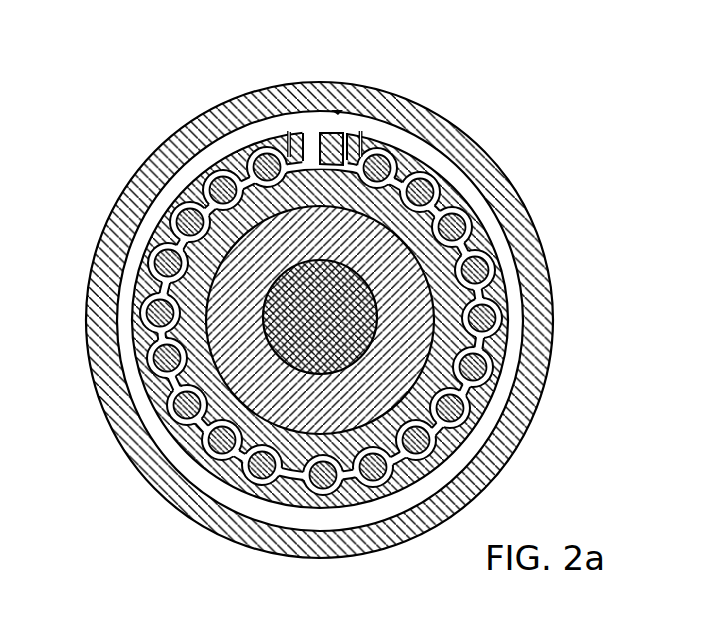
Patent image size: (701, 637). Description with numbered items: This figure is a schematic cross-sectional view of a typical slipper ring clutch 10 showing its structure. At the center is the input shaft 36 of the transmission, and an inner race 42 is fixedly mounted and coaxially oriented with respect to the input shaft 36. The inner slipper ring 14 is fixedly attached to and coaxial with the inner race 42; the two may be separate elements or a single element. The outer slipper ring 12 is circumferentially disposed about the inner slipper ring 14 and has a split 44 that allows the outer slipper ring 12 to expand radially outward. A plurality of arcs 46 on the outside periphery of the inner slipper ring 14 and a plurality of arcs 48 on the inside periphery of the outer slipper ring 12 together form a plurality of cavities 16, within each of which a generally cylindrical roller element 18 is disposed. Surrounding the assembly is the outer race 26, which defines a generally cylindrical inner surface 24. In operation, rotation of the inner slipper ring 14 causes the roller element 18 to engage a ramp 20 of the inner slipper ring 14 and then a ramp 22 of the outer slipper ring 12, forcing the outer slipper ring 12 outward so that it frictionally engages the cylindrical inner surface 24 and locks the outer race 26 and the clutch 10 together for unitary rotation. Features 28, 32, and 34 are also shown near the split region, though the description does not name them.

The slipper ring clutch 10 is at (364, 58).
The outer slipper ring 12 is at (136, 207).
The inner slipper ring 14 is at (181, 383).
The cavity 16 is at (496, 350).
The roller element 18 is at (156, 268).
The ramp 20 is at (220, 447).
The ramp 22 is at (262, 470).
The cylindrical inner surface 24 is at (319, 118).
The outer race 26 is at (162, 147).
The edge 28 is at (351, 132).
The block 32 is at (341, 136).
The block 34 is at (284, 131).
The input shaft 36 is at (320, 378).
The inner race 42 is at (382, 482).
The split 44 is at (297, 136).
The arcs 46 is at (452, 380).
The arcs 48 is at (440, 173).